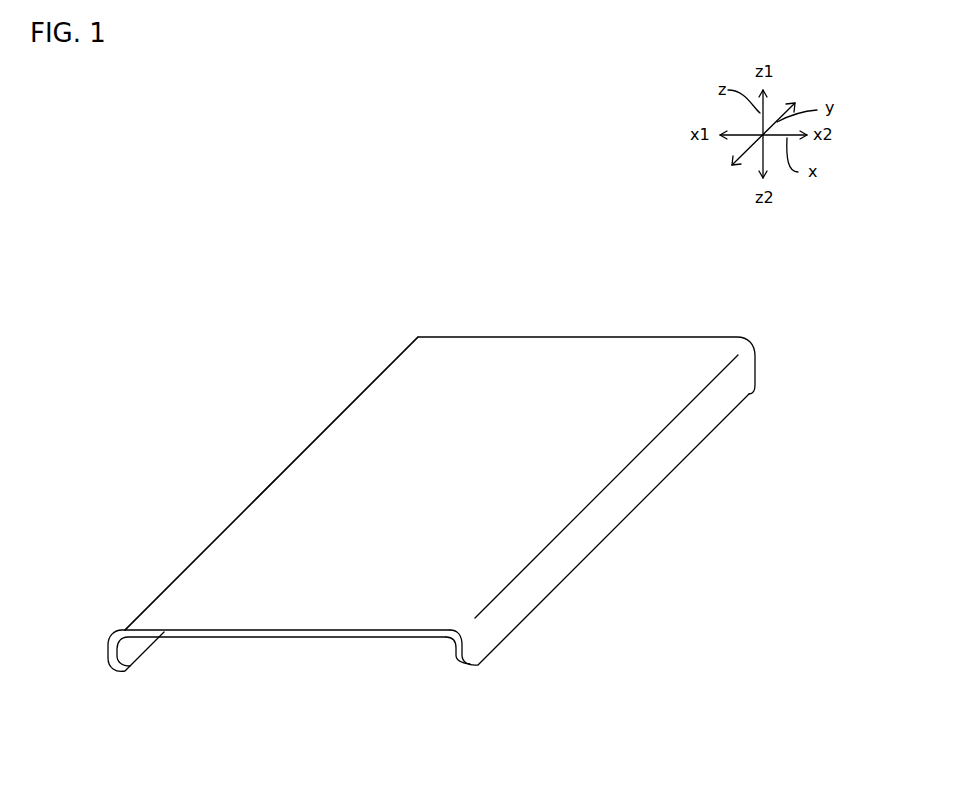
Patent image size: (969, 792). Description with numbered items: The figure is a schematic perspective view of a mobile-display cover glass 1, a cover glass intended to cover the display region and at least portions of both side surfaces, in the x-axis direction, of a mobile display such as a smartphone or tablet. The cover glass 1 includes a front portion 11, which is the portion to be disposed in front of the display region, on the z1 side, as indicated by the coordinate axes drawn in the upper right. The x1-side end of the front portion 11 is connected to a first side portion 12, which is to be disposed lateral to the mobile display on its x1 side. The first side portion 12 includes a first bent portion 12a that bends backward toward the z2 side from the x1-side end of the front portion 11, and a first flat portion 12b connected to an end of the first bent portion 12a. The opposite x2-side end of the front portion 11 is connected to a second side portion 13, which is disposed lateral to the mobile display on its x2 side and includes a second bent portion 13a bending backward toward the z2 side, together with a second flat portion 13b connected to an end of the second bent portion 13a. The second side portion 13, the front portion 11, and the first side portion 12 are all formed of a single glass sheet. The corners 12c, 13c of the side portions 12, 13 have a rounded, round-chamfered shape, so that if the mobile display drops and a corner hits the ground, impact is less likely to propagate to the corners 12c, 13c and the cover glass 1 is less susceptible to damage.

The mobile-display cover glass 1 is at (711, 311).
The front portion 11 is at (581, 360).
The first side portion 12 is at (236, 694).
The first bent portion 12a is at (227, 522).
The first flat portion 12b is at (108, 656).
The corner of first side portion 12c is at (133, 663).
The second side portion 13 is at (600, 552).
The second bent portion 13a is at (595, 506).
The second flat portion 13b is at (543, 585).
The corner of second side portion 13c is at (492, 644).